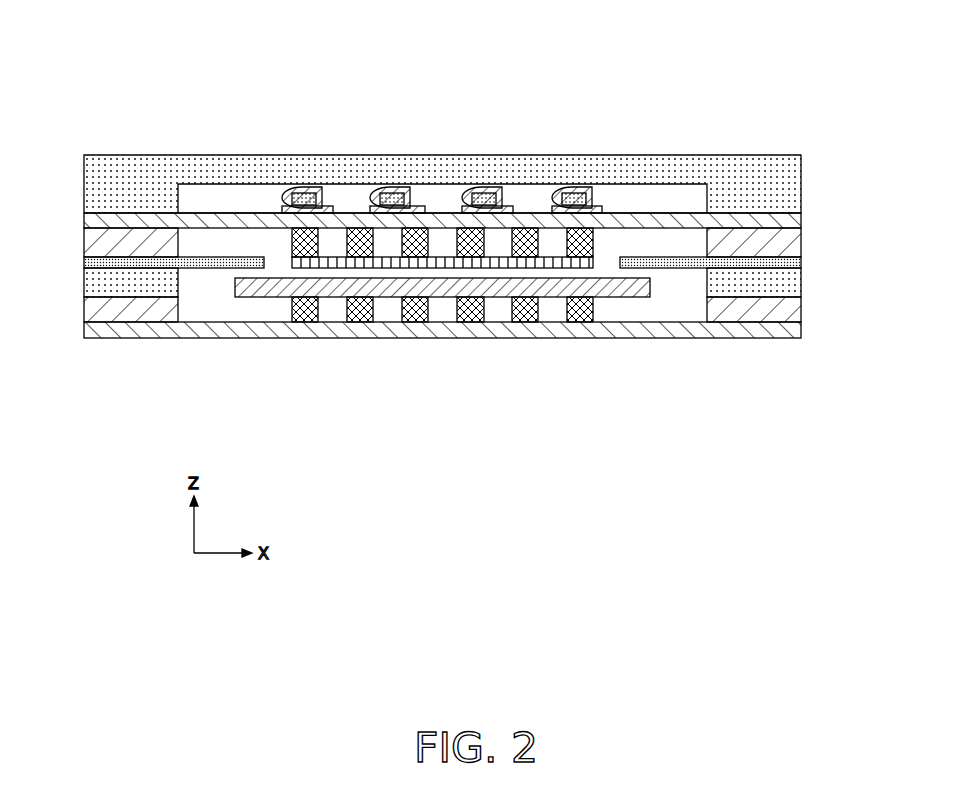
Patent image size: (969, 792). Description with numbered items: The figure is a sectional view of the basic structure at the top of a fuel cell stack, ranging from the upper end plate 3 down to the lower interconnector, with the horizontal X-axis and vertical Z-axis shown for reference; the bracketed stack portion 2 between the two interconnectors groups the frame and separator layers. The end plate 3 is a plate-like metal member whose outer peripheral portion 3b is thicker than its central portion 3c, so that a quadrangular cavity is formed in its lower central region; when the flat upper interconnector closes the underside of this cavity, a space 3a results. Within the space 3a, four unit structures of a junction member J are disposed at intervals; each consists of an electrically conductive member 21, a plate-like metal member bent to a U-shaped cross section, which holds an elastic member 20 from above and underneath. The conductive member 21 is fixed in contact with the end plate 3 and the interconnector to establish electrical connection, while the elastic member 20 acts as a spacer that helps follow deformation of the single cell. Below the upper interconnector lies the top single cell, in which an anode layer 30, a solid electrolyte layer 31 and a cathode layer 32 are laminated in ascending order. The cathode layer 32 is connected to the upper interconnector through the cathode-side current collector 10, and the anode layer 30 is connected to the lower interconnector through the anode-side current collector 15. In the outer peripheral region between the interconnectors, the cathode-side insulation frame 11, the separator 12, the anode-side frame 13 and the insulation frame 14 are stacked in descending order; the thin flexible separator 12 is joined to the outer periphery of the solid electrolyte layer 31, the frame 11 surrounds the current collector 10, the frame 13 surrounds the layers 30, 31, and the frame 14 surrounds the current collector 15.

The laminated substrate body 2 is at (74, 227).
The end plate 3 is at (803, 182).
The space 3a is at (654, 198).
The outer peripheral portion 3b is at (133, 180).
The central portion 3c is at (260, 166).
The cathode-side current collector 10 is at (291, 239).
The cathode-side insulation frame 11 is at (803, 240).
The separator 12 is at (803, 263).
The anode-side frame 13 is at (803, 287).
The insulation frame 14 is at (803, 311).
The anode-side current collector 15 is at (291, 307).
The elastic member 20 is at (568, 190).
The electrically conductive member 21 is at (583, 190).
The junction member J is at (605, 76).
The anode layer 30 is at (628, 288).
The solid electrolyte layer 31 is at (604, 274).
The cathode layer 32 is at (551, 264).